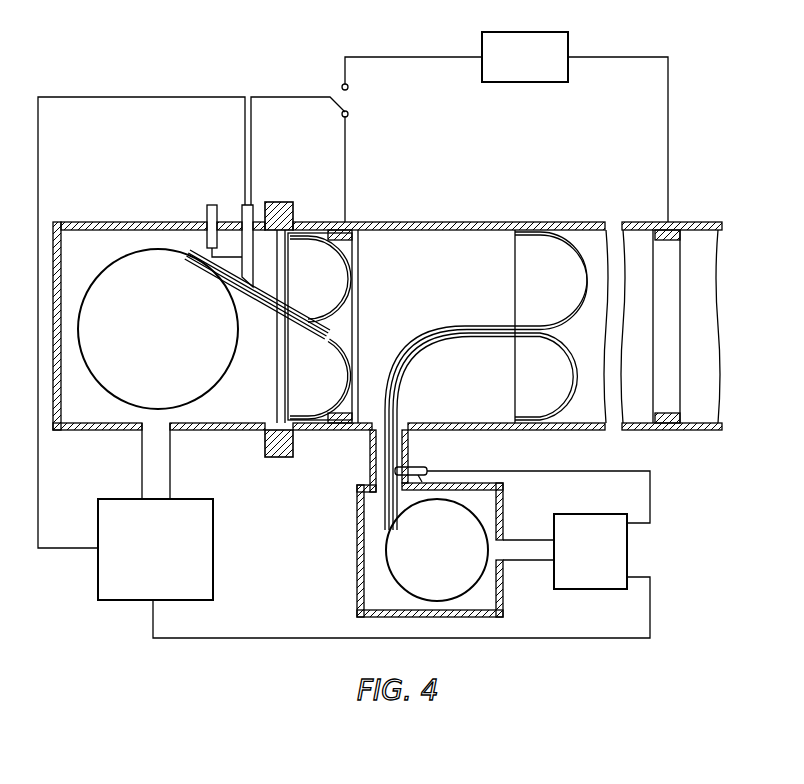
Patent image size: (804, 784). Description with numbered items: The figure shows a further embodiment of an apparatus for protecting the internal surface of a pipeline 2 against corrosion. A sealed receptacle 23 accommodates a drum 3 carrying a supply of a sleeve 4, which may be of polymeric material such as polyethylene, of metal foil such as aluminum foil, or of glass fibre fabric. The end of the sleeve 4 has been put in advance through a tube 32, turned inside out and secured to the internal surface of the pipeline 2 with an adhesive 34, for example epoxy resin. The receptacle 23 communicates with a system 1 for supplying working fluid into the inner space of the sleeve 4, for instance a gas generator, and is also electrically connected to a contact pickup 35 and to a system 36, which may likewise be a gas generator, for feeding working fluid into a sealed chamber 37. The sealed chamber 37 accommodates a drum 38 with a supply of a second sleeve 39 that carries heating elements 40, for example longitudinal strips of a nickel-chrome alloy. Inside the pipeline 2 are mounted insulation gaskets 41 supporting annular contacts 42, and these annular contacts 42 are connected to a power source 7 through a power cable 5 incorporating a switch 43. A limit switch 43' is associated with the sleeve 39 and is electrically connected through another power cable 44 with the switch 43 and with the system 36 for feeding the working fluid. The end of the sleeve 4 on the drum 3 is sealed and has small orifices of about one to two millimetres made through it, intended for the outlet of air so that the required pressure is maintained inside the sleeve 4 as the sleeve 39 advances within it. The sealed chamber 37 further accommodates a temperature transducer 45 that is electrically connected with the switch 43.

The system for supplying the working fluid 1 is at (401, 554).
The pipeline 2 is at (456, 222).
The drum 3 is at (396, 578).
The sleeve 4 is at (584, 279).
The power cable 5 is at (447, 57).
The power source 7 is at (525, 57).
The sealed receptacle 23 is at (496, 600).
The tube 32 is at (370, 458).
The adhesive 34 is at (531, 221).
The contact pickup 35 is at (426, 467).
The system for feeding the working fluid 36 is at (155, 511).
The sealed chamber 37 is at (94, 430).
The drum 38 is at (106, 278).
The sleeve 39 is at (350, 282).
The heating elements 40 is at (297, 222).
The insulation gaskets 41 is at (345, 222).
The annular contacts 42 is at (357, 232).
The switch 43 is at (299, 137).
The limit switch 43' is at (232, 229).
The power cable 44 is at (153, 97).
The temperature transducer 45 is at (207, 210).